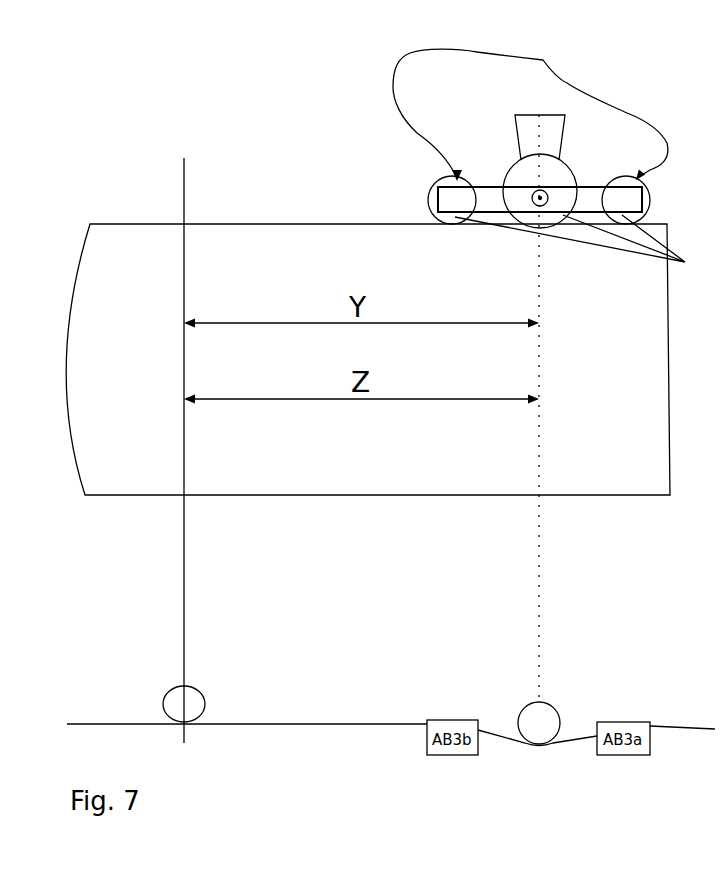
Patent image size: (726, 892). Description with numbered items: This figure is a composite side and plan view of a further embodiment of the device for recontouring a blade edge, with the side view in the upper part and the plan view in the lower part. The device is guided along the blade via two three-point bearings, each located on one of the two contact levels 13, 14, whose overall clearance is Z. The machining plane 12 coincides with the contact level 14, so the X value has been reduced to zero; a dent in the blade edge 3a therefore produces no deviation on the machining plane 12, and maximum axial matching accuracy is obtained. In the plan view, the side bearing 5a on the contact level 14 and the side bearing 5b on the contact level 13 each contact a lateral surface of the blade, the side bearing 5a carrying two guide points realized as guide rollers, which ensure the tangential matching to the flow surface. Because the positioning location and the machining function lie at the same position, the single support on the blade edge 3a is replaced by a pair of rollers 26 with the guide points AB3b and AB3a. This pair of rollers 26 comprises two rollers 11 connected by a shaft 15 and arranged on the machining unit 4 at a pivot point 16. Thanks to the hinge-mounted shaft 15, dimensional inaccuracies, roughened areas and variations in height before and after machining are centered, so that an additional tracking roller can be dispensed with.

The edge of the blade 3a is at (326, 212).
The machining unit 4 is at (523, 170).
The side bearing 5a is at (546, 711).
The side bearing 5b is at (194, 702).
The rollers 11 is at (588, 246).
The machining plane 12 is at (589, 407).
The contact level 14 is at (541, 566).
The contact level 13 is at (187, 173).
The shaft 15 is at (460, 189).
The pivot point 16 is at (548, 191).
The pair of rollers 26 is at (530, 107).
The guide point AB3a is at (643, 199).
The guide point AB3b is at (437, 198).